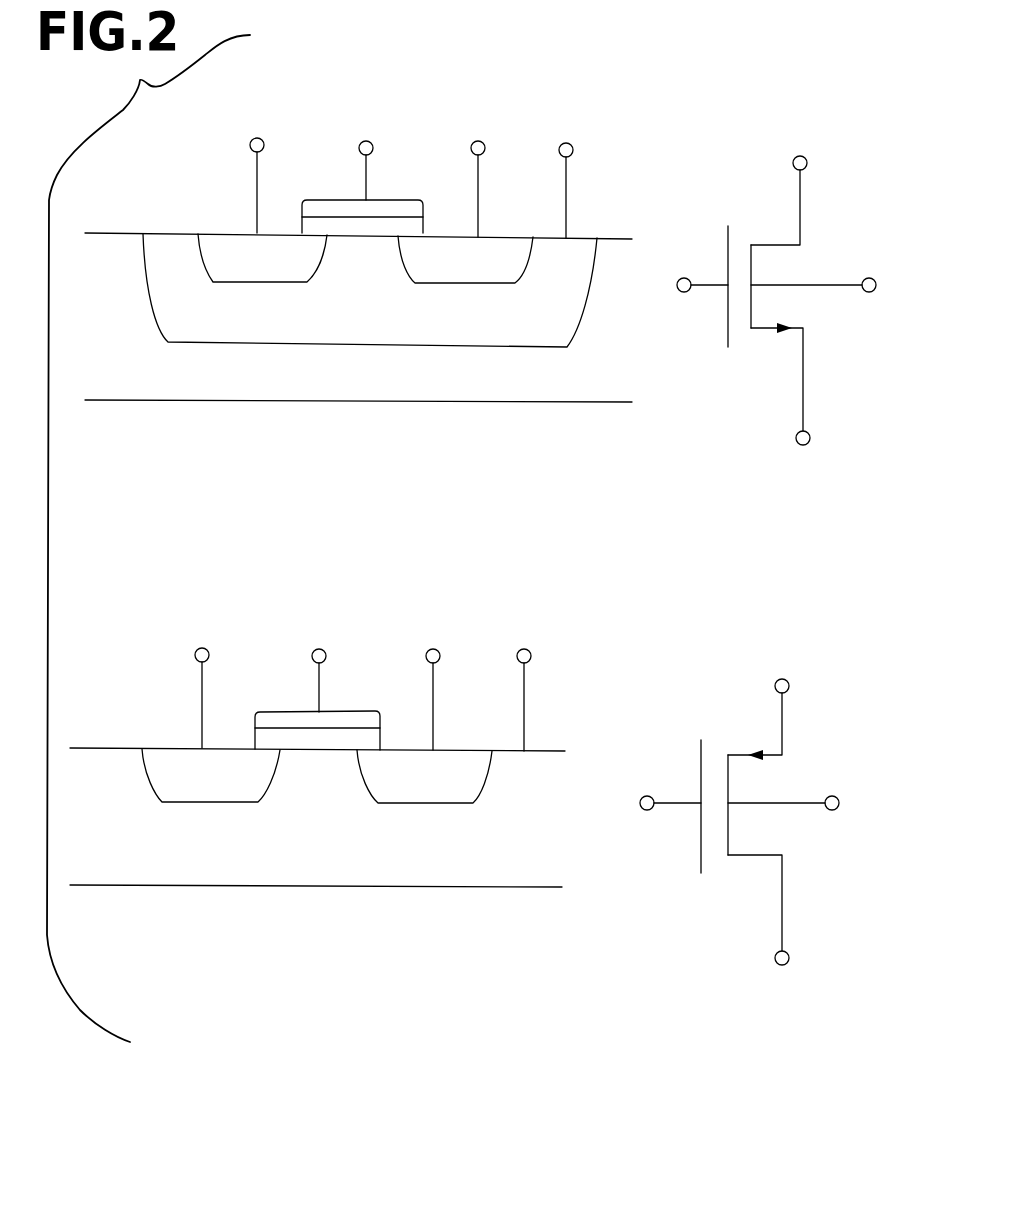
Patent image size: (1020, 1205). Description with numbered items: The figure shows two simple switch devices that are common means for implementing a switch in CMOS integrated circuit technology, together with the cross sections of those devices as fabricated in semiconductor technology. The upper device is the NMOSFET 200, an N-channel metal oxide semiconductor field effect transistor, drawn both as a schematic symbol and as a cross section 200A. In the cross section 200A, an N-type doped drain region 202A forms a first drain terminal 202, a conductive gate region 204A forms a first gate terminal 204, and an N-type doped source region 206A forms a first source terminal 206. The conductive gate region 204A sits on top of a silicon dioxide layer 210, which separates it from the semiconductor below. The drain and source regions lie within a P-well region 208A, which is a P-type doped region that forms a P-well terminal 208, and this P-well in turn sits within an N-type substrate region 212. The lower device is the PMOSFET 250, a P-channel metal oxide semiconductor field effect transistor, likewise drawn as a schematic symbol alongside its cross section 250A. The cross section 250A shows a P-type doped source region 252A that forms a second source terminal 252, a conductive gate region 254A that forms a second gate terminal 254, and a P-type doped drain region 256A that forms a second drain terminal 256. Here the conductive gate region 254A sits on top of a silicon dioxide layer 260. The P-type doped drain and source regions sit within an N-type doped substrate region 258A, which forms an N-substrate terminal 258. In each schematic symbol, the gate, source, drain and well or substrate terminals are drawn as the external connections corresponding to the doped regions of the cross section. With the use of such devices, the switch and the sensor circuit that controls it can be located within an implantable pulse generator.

The NMOSFET 200 is at (856, 200).
The cross section of the NMOSFET 200A is at (228, 204).
The first drain terminal 202 is at (262, 136).
The N-type doped drain region 202A is at (225, 258).
The first gate terminal 204 is at (375, 140).
The conductive gate region 204A is at (389, 203).
The first source terminal 206 is at (490, 140).
The N-type doped source region 206A is at (427, 260).
The P-well terminal 208 is at (578, 146).
The P-well region 208A is at (560, 307).
The silicon dioxide layer 210 is at (323, 228).
The N-type substrate region 212 is at (216, 379).
The PMOSFET 250 is at (833, 752).
The cross section of the PMOSFET 250A is at (409, 578).
The second source terminal 252 is at (205, 645).
The P-type doped source region 252A is at (172, 777).
The second gate terminal 254 is at (352, 636).
The conductive gate region 254A is at (370, 697).
The second drain terminal 256 is at (444, 648).
The P-type doped drain region 256A is at (392, 776).
The N-substrate terminal 258 is at (536, 650).
The N-type doped substrate region 258A is at (288, 858).
The silicon dioxide layer 260 is at (276, 740).